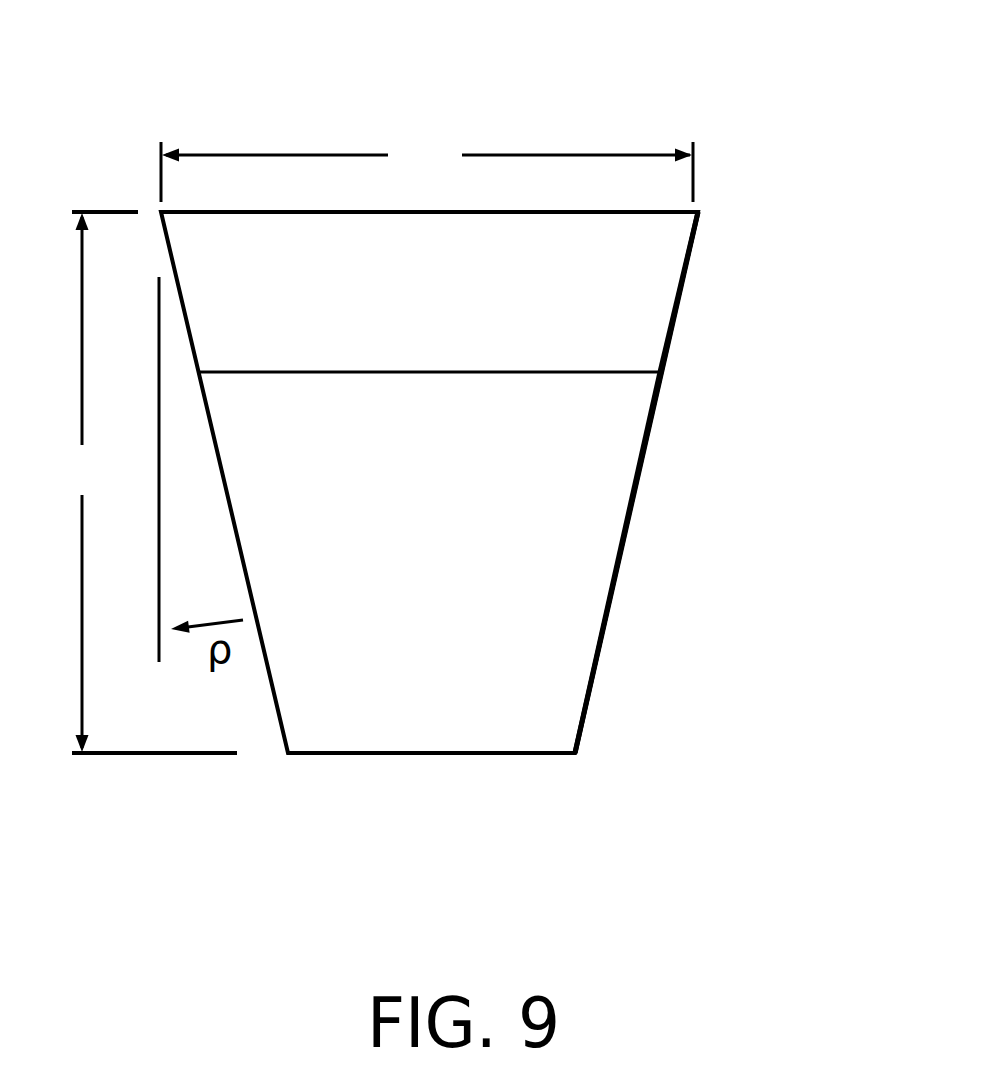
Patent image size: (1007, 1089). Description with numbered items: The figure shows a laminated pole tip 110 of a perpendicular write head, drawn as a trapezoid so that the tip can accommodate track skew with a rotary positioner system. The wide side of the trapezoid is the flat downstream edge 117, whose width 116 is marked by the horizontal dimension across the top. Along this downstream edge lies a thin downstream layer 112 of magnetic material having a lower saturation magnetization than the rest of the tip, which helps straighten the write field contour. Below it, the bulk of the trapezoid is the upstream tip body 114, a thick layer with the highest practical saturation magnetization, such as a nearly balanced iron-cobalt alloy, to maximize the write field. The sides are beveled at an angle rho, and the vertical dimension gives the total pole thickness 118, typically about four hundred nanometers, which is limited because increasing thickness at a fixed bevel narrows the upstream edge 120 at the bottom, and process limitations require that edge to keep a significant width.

The laminated pole tip 110 is at (728, 82).
The downstream layer 112 is at (688, 304).
The upstream tip body 114 is at (623, 580).
The width of the downstream edge 116 is at (427, 164).
The downstream edge 117 is at (603, 209).
The total pole thickness 118 is at (142, 482).
The upstream edge 120 is at (524, 748).